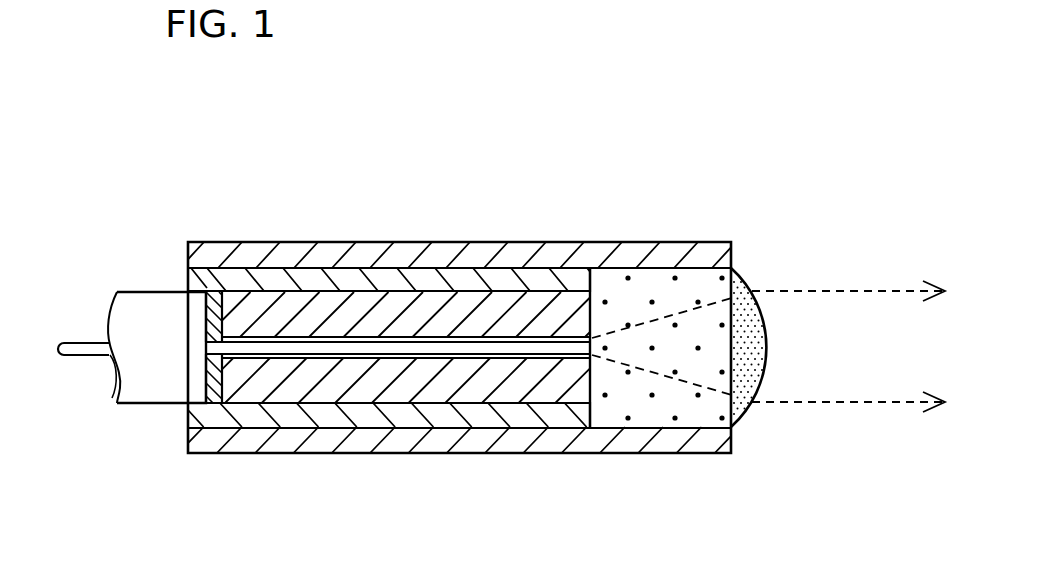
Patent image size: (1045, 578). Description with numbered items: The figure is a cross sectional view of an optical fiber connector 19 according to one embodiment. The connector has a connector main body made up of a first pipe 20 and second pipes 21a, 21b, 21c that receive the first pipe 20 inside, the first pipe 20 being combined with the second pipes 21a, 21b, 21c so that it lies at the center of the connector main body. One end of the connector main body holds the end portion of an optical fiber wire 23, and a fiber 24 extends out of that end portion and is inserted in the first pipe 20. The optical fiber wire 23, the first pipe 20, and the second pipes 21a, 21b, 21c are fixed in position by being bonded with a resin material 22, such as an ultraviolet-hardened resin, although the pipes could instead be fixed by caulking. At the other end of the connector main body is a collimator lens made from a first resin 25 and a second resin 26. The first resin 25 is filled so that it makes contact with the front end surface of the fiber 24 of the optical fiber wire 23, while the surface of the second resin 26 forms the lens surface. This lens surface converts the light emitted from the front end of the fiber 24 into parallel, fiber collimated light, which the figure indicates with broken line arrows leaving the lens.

The optical fiber connector 19 is at (127, 217).
The first pipe 20 is at (533, 336).
The second pipe 21a is at (318, 302).
The second pipe 21b is at (210, 250).
The second pipe 21c is at (435, 256).
The resin material 22 is at (213, 390).
The optical fiber wire 23 is at (150, 383).
The fiber 24 is at (498, 348).
The first resin 25 is at (674, 278).
The second resin 26 is at (750, 357).